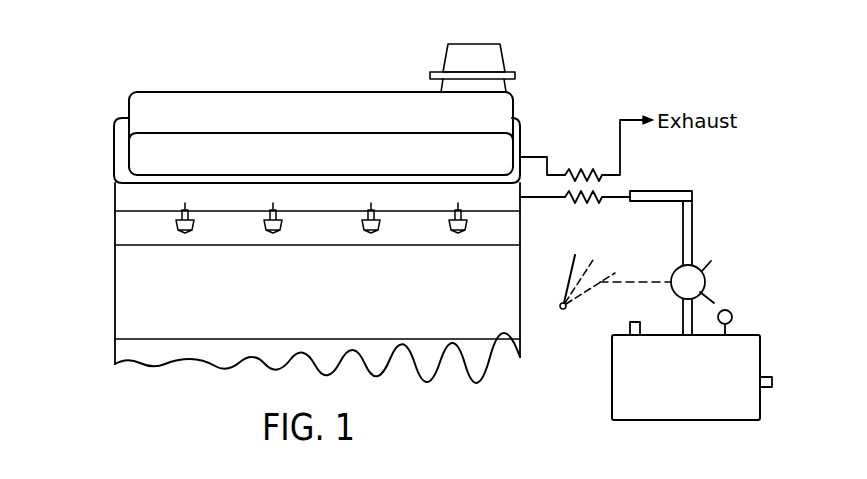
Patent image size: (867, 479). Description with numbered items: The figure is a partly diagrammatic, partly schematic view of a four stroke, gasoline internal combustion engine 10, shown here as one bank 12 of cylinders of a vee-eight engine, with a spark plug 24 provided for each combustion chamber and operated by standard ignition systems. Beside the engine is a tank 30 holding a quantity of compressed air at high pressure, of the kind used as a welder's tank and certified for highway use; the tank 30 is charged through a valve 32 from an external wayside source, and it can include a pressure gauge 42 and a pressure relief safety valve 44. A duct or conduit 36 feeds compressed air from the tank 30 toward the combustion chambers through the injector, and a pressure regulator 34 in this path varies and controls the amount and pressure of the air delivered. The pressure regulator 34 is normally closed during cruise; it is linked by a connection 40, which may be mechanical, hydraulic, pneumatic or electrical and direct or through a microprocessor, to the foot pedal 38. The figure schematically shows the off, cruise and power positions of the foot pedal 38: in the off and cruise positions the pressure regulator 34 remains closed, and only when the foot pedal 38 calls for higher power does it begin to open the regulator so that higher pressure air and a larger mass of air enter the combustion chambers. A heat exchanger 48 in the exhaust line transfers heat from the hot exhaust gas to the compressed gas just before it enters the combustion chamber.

The internal combustion engine 10 is at (615, 99).
The bank 12 is at (106, 271).
The spark plug 24 is at (262, 223).
The tank 30 is at (612, 390).
The valve 32 is at (760, 383).
The pressure regulator 34 is at (700, 268).
The duct or conduit 36 is at (654, 197).
The foot pedal 38 is at (568, 279).
The connection 40 is at (630, 283).
The pressure gauge 42 is at (733, 315).
The pressure relief safety valve 44 is at (630, 326).
The heat exchanger 48 is at (581, 163).